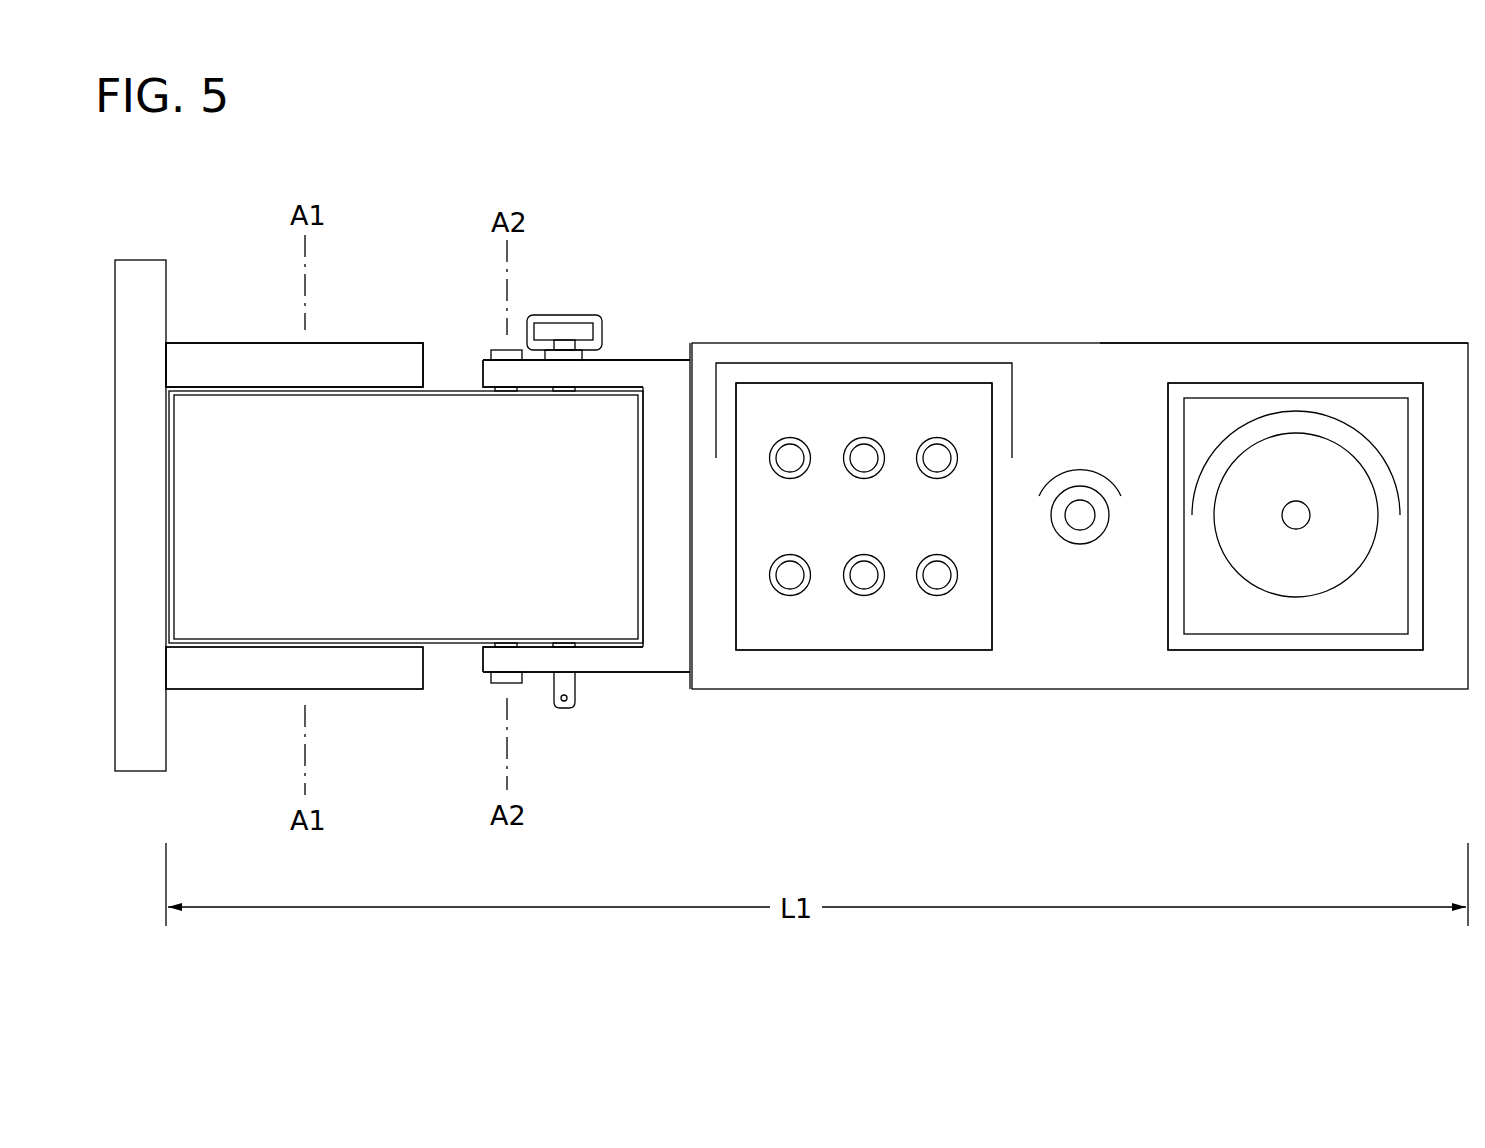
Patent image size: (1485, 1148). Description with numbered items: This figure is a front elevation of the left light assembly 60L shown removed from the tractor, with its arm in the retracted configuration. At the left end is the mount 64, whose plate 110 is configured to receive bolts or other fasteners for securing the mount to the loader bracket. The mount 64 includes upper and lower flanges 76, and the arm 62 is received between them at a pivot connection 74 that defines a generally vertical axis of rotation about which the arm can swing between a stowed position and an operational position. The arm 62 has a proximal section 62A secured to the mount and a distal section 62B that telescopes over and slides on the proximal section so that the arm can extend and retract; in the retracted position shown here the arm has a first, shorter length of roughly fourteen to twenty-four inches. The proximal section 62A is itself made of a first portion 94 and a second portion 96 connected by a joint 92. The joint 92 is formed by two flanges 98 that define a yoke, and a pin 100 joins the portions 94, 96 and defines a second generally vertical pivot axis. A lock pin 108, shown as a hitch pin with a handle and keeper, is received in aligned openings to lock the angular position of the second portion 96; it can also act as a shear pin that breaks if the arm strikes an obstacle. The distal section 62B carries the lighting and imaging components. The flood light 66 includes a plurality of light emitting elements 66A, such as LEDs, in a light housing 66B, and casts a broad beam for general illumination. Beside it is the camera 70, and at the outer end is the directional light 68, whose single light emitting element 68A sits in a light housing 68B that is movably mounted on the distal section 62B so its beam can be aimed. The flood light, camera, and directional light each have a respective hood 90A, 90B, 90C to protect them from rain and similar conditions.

The left light assembly 60L is at (1212, 138).
The plate 110 is at (166, 287).
The mount 64 is at (246, 340).
The upper and lower flanges 76 is at (367, 358).
The pivot connection 74 is at (350, 242).
The first portion of proximal section 94 is at (440, 565).
The joint 92 is at (480, 288).
The flanges 98 is at (608, 373).
The second portion of proximal section 96 is at (668, 618).
The lock pin 108 is at (567, 315).
The pin 100 is at (502, 683).
The arm 62 is at (848, 336).
The proximal section 62A is at (650, 358).
The distal section 62B is at (1188, 343).
The hood 90A is at (797, 363).
The hood 90B is at (1090, 468).
The hood 90C is at (1327, 417).
The flood light 66 is at (910, 662).
The light emitting elements 66A is at (863, 437).
The light housing 66B is at (948, 650).
The camera 70 is at (1065, 542).
The directional light 68 is at (1284, 652).
The light emitting element 68A is at (1237, 573).
The light housing 68B is at (1356, 637).